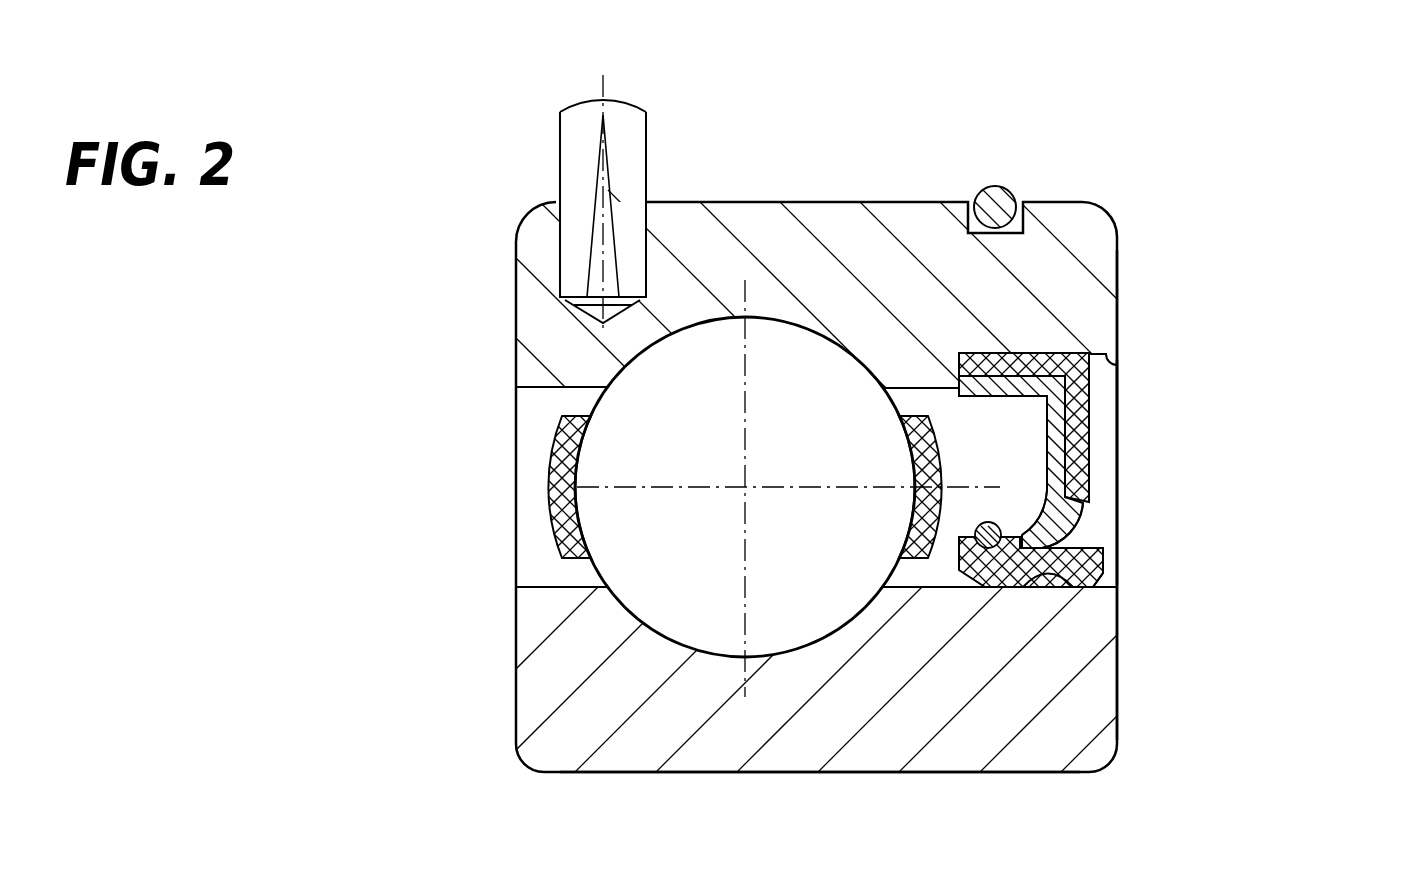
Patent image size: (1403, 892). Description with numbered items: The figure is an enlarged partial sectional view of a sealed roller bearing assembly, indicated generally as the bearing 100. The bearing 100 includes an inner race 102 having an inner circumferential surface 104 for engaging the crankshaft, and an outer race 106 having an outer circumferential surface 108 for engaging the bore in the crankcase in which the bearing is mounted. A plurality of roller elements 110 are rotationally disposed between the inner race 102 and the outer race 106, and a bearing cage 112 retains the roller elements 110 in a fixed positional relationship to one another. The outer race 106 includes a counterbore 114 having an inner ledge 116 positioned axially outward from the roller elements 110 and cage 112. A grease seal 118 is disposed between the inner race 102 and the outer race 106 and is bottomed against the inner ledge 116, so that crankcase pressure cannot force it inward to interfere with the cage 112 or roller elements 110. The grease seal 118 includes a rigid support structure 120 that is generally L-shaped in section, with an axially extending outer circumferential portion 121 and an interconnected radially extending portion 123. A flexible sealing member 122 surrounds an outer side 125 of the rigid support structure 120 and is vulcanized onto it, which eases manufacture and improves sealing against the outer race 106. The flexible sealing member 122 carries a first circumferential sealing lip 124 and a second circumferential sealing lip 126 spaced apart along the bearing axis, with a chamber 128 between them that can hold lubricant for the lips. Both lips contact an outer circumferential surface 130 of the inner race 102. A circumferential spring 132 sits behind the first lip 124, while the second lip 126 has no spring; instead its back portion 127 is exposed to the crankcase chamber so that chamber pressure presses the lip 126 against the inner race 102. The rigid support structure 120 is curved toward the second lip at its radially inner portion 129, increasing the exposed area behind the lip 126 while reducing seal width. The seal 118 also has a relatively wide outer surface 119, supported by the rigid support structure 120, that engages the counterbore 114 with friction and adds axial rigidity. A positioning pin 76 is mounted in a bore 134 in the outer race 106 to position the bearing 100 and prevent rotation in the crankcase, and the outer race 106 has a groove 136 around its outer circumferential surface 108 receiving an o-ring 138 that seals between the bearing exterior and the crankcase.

The positioning pin 76 is at (627, 128).
The bearing 100 is at (1282, 213).
The inner race 102 is at (1105, 677).
The inner circumferential surface 104 is at (1023, 773).
The outer race 106 is at (1103, 267).
The outer circumferential surface 108 is at (837, 202).
The roller elements 110 is at (657, 575).
The bearing cage 112 is at (558, 497).
The counterbore 114 is at (1095, 354).
The inner ledge 116 is at (957, 372).
The grease seal 118 is at (1103, 445).
The outer surface 119 is at (1047, 352).
The rigid support structure 120 is at (1056, 403).
The axially extending outer circumferential portion 121 is at (990, 390).
The flexible sealing member 122 is at (1087, 487).
The radially extending portion 123 is at (1053, 450).
The first circumferential sealing lip 124 is at (985, 581).
The outer side 125 is at (1017, 352).
The second circumferential sealing lip 126 is at (1093, 568).
The back portion 127 is at (1080, 548).
The chamber 128 is at (1055, 580).
The radially inner portion 129 is at (1087, 503).
The outer circumferential surface 130 is at (910, 573).
The circumferential spring 132 is at (995, 527).
The bore 134 is at (649, 252).
The groove 136 is at (1037, 215).
The o-ring 138 is at (993, 186).